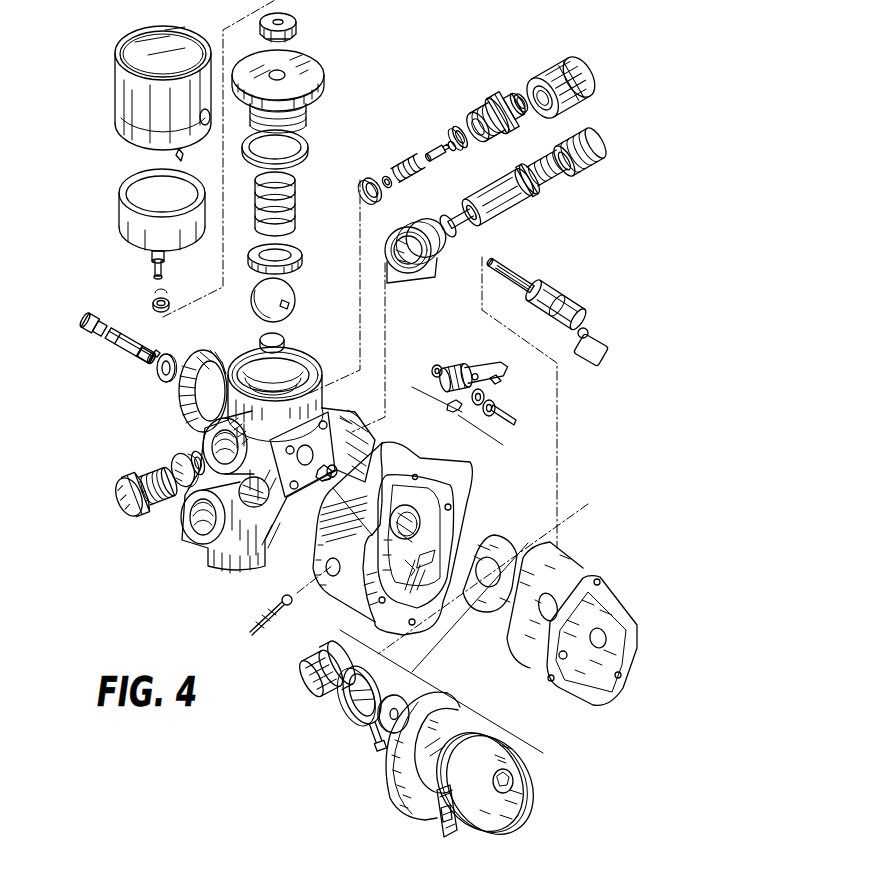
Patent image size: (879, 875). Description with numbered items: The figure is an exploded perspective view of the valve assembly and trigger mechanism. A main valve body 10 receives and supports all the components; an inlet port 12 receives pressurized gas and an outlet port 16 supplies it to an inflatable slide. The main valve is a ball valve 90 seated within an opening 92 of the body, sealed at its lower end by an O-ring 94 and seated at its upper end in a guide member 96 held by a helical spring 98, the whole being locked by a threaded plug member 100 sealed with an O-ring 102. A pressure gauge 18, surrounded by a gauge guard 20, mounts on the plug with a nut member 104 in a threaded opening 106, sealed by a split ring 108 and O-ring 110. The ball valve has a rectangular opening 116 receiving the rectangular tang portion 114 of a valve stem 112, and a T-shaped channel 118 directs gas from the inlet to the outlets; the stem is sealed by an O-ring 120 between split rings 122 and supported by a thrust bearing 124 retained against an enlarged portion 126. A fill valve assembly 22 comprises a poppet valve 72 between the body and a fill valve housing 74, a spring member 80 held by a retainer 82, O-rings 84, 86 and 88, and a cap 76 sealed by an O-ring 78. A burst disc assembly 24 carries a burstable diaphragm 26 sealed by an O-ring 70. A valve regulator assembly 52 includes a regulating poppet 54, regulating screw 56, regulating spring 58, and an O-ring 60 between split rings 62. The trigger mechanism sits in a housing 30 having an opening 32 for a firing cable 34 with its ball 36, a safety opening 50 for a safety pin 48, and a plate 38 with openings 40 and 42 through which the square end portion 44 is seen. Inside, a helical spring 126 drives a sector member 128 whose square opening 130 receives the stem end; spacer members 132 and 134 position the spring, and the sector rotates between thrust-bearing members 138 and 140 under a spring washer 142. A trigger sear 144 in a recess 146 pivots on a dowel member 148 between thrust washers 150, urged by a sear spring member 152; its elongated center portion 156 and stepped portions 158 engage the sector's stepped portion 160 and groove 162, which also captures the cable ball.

The main valve body 10 is at (302, 364).
The inlet port 12 is at (172, 463).
The outlet port 16 is at (223, 563).
The pressure gauge 18 is at (130, 193).
The gauge guard 20 is at (116, 92).
The fill valve assembly 22 is at (484, 92).
The burst disc assembly 24 is at (112, 471).
The burstable diaphragm 26 is at (190, 508).
The trigger mechanism housing 30 is at (450, 410).
The opening 32 is at (327, 590).
The firing cable 34 is at (252, 623).
The ball 36 is at (285, 595).
The plate 38 is at (612, 594).
The opening 40 is at (607, 640).
The opening 42 is at (566, 662).
The end portion of valve stem 44 is at (160, 352).
The safety pin 48 is at (550, 287).
The safety opening 50 is at (415, 625).
The valve regulator assembly 52 is at (586, 183).
The regulating poppet 54 is at (492, 185).
The regulating screw 56 is at (597, 145).
The regulating spring 58 is at (556, 186).
The O-ring 60 is at (400, 232).
The split rings 62 is at (432, 280).
The O-ring 70 is at (183, 540).
The poppet valve 72 is at (449, 141).
The fill valve housing 74 is at (506, 100).
The cap 76 is at (568, 62).
The O-ring 78 is at (573, 108).
The spring member 80 is at (430, 155).
The retainer 82 is at (388, 175).
The O-ring 84 is at (363, 190).
The O-ring 86 is at (460, 128).
The O-ring 88 is at (416, 173).
The ball valve 90 is at (252, 284).
The opening 92 is at (188, 415).
The O-ring 94 is at (261, 338).
The guide member 96 is at (296, 247).
The helical spring 98 is at (296, 180).
The threaded plug member 100 is at (310, 78).
The O-ring 102 is at (300, 142).
The nut member 104 is at (297, 32).
The threaded opening 106 is at (284, 72).
The split ring 108 is at (153, 289).
The O-ring 110 is at (158, 308).
The valve stem 112 is at (113, 350).
The rectangular tang portion 114 is at (85, 318).
The rectangular opening 116 is at (290, 304).
The T-shaped channel 118 is at (262, 296).
The O-ring 120 is at (320, 483).
The split rings 122 is at (349, 423).
The thrust bearing 124 is at (157, 373).
The helical spring 126 is at (97, 333).
The sector member 128 is at (514, 772).
The square opening 130 is at (513, 780).
The spacer member 132 is at (307, 683).
The spacer member 134 is at (407, 703).
The upper thrust-bearing member 138 is at (562, 552).
The lower thrust-bearing member 140 is at (393, 792).
The spring washer 142 is at (520, 537).
The trigger sear 144 is at (490, 365).
The recess 146 is at (402, 576).
The dowel member 148 is at (513, 417).
The thrust washers 150 is at (437, 364).
The sear spring member 152 is at (455, 412).
The elongated center portion 156 is at (503, 368).
The stepped portions 158 is at (480, 368).
The stepped portion 160 is at (445, 832).
The groove 162 is at (437, 805).